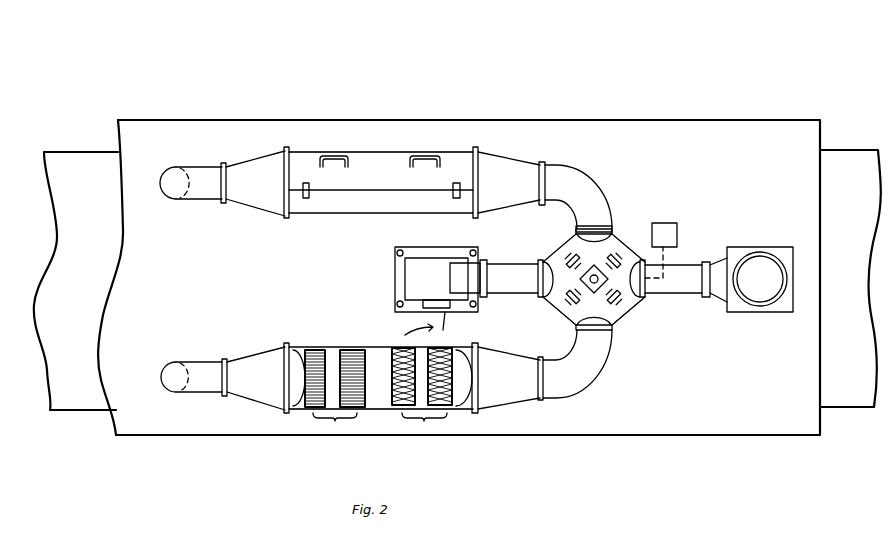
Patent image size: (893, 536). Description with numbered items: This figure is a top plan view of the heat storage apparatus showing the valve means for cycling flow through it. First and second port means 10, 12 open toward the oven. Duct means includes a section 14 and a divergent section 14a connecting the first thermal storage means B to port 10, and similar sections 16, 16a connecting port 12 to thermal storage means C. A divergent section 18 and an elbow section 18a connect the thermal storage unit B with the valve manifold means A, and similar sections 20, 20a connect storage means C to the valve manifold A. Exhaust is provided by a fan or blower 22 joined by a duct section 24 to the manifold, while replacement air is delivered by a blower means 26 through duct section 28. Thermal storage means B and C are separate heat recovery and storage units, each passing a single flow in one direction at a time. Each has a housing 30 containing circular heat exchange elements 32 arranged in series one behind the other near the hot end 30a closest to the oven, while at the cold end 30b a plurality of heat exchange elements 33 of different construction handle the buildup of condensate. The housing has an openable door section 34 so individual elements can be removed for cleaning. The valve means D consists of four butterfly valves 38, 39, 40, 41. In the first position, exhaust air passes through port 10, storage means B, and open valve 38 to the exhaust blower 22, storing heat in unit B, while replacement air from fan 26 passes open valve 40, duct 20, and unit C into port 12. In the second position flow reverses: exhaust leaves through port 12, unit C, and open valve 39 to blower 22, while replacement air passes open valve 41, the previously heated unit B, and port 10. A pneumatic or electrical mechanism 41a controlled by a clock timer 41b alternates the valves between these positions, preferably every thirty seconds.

The first port means 10 is at (163, 375).
The second port means 12 is at (173, 191).
The duct section 14 is at (192, 347).
The divergent section 14a is at (260, 350).
The duct section 16 is at (200, 166).
The divergent section 16a is at (270, 130).
The divergent section 18 is at (516, 403).
The elbow section 18a is at (608, 352).
The duct section 20 is at (496, 152).
The elbow section 20a is at (562, 166).
The exhaust blower 22 is at (772, 230).
The duct section 24 is at (691, 262).
The blower means 26 is at (417, 277).
The duct section 28 is at (513, 263).
The housing 30 is at (357, 345).
The hot end 30a is at (345, 156).
The cold end 30b is at (447, 153).
The heat exchange elements 32 is at (335, 393).
The heat exchange elements 33 is at (422, 392).
The openable door section 34 is at (385, 158).
The butterfly valve 38 is at (614, 322).
The butterfly valve 39 is at (622, 252).
The butterfly valve 40 is at (578, 255).
The butterfly valve 41 is at (577, 305).
The pneumatic or electrical mechanism 41a is at (620, 292).
The clock timer 41b is at (664, 223).
The valve manifold means A is at (622, 300).
The thermal storage means B is at (380, 412).
The thermal storage means C is at (350, 150).
The valve means D is at (567, 305).